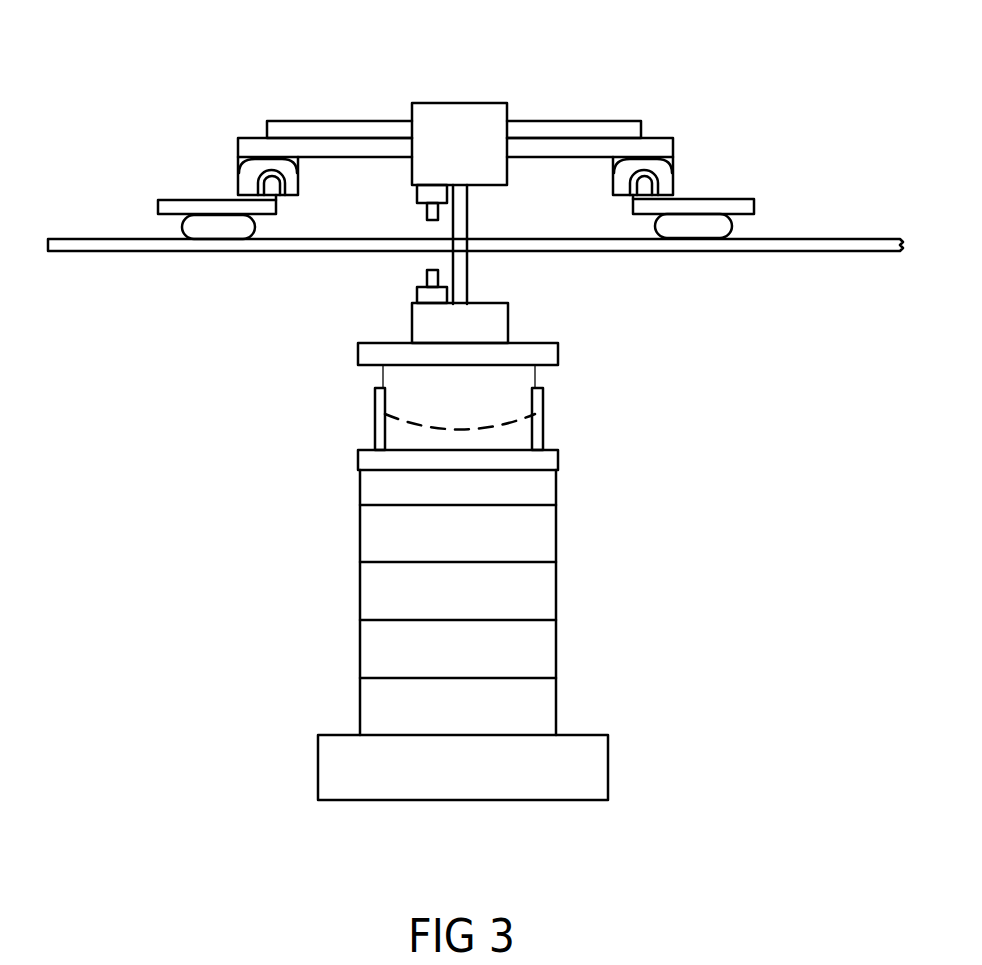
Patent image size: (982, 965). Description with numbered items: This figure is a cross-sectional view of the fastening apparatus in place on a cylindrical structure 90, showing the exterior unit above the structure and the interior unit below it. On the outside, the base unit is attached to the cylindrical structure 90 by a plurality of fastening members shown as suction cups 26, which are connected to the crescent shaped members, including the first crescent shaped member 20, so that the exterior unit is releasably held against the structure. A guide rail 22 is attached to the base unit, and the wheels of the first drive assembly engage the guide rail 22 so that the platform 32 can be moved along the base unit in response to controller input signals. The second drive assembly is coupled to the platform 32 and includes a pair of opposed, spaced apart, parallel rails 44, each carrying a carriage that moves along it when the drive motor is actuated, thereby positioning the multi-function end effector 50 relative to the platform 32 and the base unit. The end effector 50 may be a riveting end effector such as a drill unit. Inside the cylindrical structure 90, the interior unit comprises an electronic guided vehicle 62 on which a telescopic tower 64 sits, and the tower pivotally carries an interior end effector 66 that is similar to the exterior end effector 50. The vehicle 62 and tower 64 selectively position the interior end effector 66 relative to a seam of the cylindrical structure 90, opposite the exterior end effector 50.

The first crescent shaped member 20 is at (754, 198).
The guide rail 22 is at (265, 190).
The suction cups 26 is at (732, 226).
The platform 32 is at (673, 138).
The rails 44 is at (641, 121).
The multi-function end effector 50 is at (455, 118).
The electronic guided vehicle 62 is at (318, 757).
The telescopic tower 64 is at (556, 573).
The interior end effector 66 is at (358, 347).
The cylindrical structure 90 is at (862, 238).